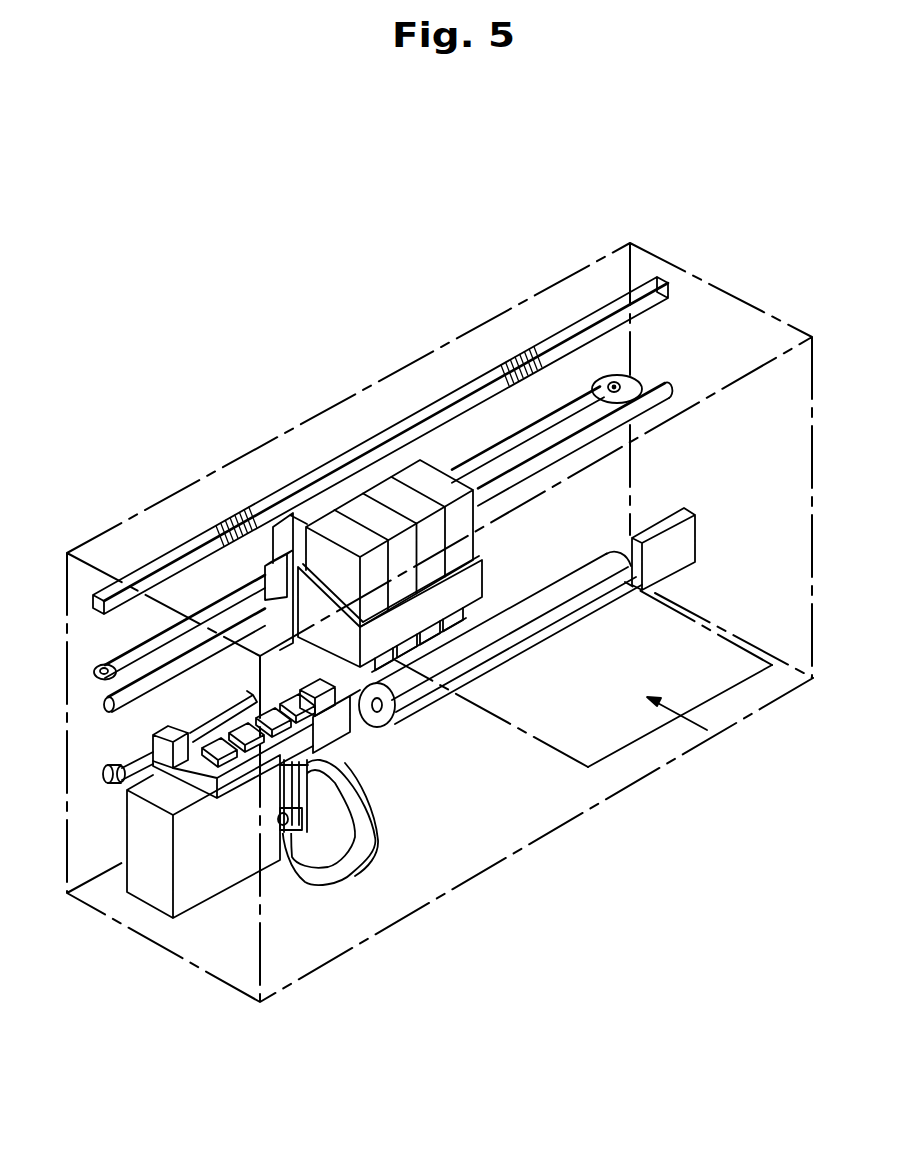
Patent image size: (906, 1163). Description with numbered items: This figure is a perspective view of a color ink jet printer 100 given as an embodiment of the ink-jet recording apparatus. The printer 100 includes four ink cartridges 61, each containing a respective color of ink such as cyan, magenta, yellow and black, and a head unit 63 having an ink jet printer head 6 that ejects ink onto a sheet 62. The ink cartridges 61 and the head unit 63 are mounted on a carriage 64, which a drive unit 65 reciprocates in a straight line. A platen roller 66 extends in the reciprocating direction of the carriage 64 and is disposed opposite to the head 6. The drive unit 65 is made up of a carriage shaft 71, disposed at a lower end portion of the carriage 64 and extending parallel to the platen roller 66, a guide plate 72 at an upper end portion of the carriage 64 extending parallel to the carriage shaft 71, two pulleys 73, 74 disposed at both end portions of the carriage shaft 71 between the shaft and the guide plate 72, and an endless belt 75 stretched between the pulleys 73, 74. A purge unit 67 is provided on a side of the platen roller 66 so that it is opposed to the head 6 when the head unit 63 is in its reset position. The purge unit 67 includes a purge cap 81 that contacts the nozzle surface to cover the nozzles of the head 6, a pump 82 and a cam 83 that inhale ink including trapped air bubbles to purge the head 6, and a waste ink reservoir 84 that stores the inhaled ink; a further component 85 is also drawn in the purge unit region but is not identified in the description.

The color ink jet printer 100 is at (307, 264).
The ink jet printer head 6 is at (469, 613).
The ink cartridges 61 is at (435, 473).
The sheet 62 is at (557, 745).
The head unit 63 is at (491, 555).
The carriage 64 is at (275, 540).
The drive unit 65 is at (662, 360).
The platen roller 66 is at (607, 557).
The purge unit 67 is at (282, 883).
The carriage shaft 71 is at (669, 390).
The guide plate 72 is at (584, 330).
The pulley 73 is at (615, 380).
The pulley 74 is at (105, 665).
The endless belt 75 is at (537, 426).
The purge cap 81 is at (280, 688).
The pump 82 is at (298, 793).
The cam 83 is at (352, 858).
The waste ink reservoir 84 is at (203, 888).
The table plate 85 is at (177, 770).